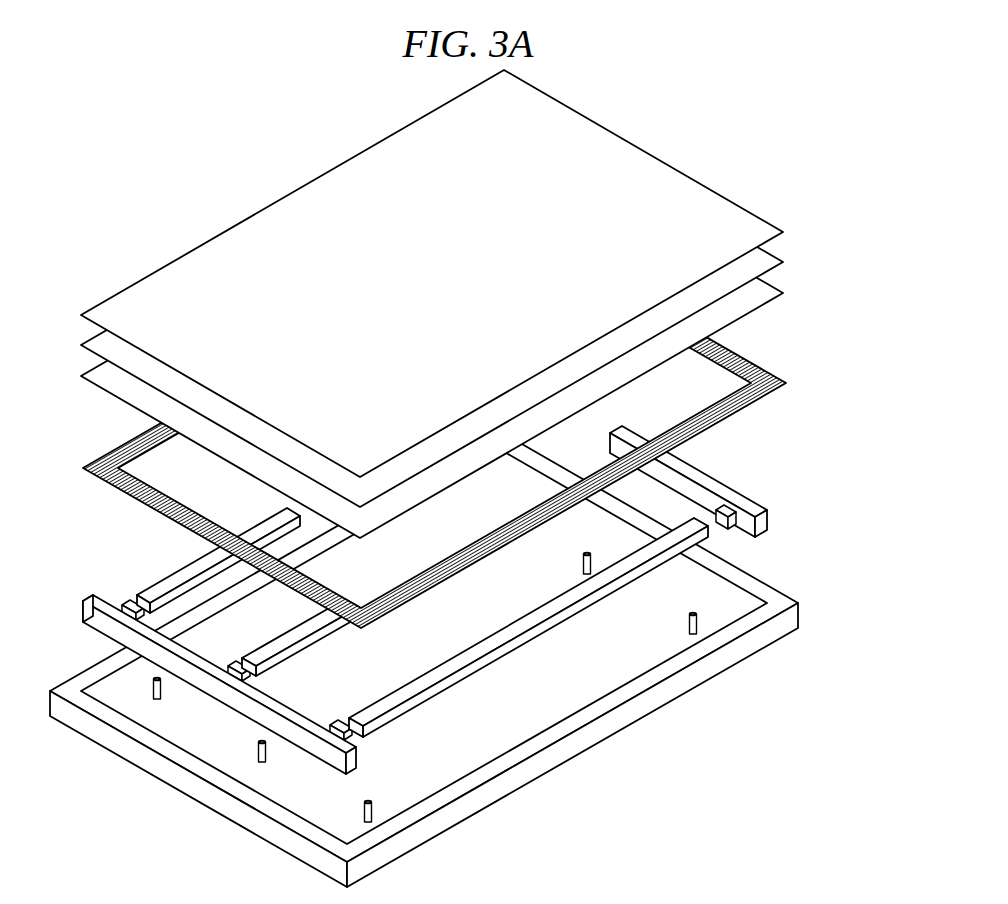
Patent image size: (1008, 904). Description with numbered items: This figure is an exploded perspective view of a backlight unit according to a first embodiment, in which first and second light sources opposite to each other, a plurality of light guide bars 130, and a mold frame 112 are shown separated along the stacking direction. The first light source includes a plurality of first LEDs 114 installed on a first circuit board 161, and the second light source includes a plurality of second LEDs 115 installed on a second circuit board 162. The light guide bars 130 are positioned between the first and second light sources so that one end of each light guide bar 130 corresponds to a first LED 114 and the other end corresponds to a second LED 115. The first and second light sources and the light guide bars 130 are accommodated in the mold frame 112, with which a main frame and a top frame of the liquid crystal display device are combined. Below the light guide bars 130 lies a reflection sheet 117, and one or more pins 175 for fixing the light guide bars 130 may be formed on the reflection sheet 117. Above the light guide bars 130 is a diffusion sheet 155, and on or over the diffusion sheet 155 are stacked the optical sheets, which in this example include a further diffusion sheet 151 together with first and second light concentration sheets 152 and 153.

The mold frame 112 is at (523, 767).
The first LEDs 114 is at (333, 732).
The second LEDs 115 is at (723, 517).
The reflection sheet 117 is at (188, 731).
The light guide bars 130 is at (159, 591).
The diffusion sheet 151 is at (746, 226).
The first light concentration sheet 152 is at (747, 261).
The second light concentration sheet 153 is at (747, 299).
The diffusion sheet 155 is at (743, 368).
The first circuit board 161 is at (260, 713).
The second circuit board 162 is at (742, 498).
The pins 175 is at (697, 621).